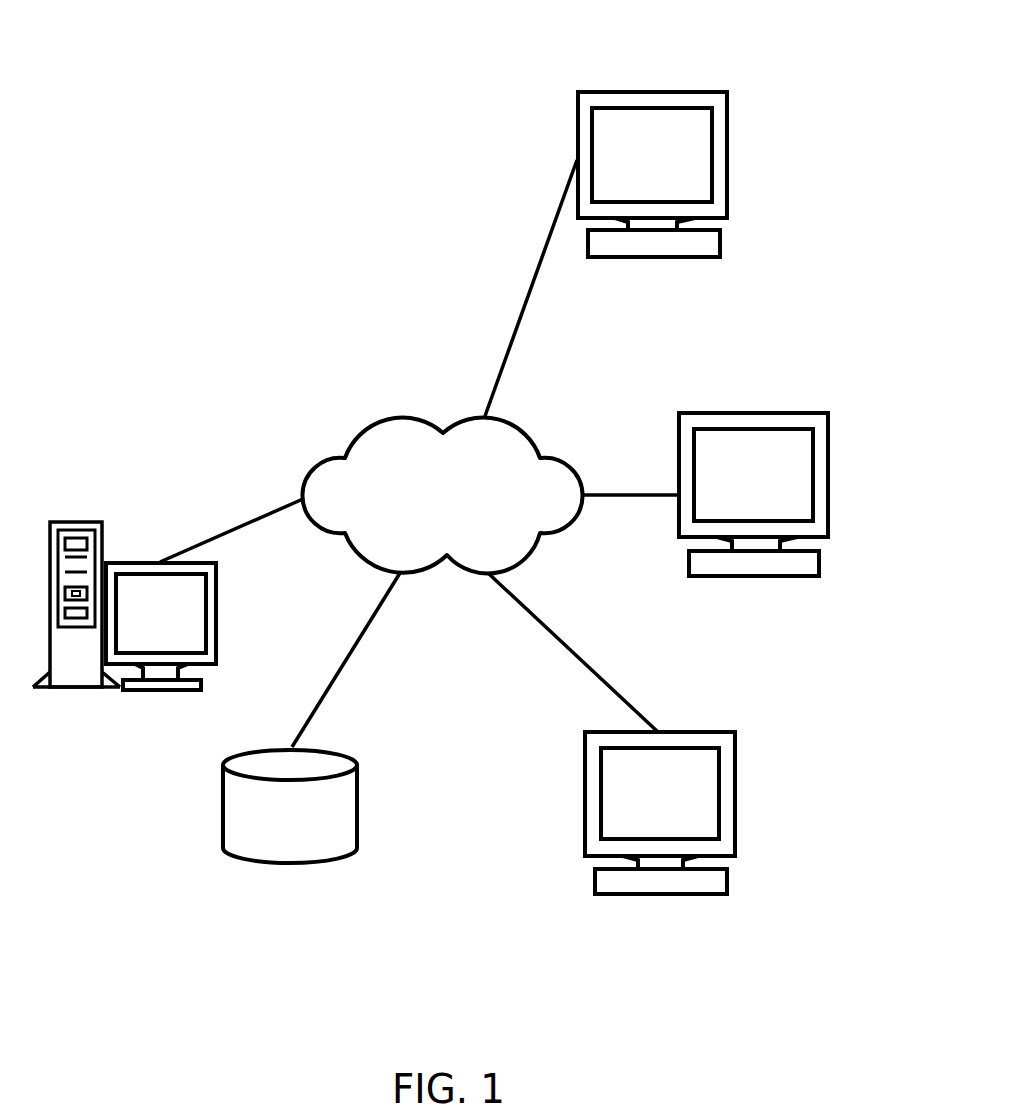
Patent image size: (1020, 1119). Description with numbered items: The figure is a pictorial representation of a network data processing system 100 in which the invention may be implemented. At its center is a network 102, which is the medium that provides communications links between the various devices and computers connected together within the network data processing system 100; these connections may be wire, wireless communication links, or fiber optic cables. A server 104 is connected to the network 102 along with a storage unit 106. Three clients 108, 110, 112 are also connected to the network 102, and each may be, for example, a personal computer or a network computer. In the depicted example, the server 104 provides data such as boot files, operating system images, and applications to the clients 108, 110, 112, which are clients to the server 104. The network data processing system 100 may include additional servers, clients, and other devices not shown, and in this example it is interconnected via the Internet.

The network data processing system 100 is at (488, 814).
The network 102 is at (392, 428).
The server 104 is at (132, 570).
The storage unit 106 is at (267, 848).
The client 108 is at (627, 102).
The client 110 is at (728, 420).
The client 112 is at (710, 883).